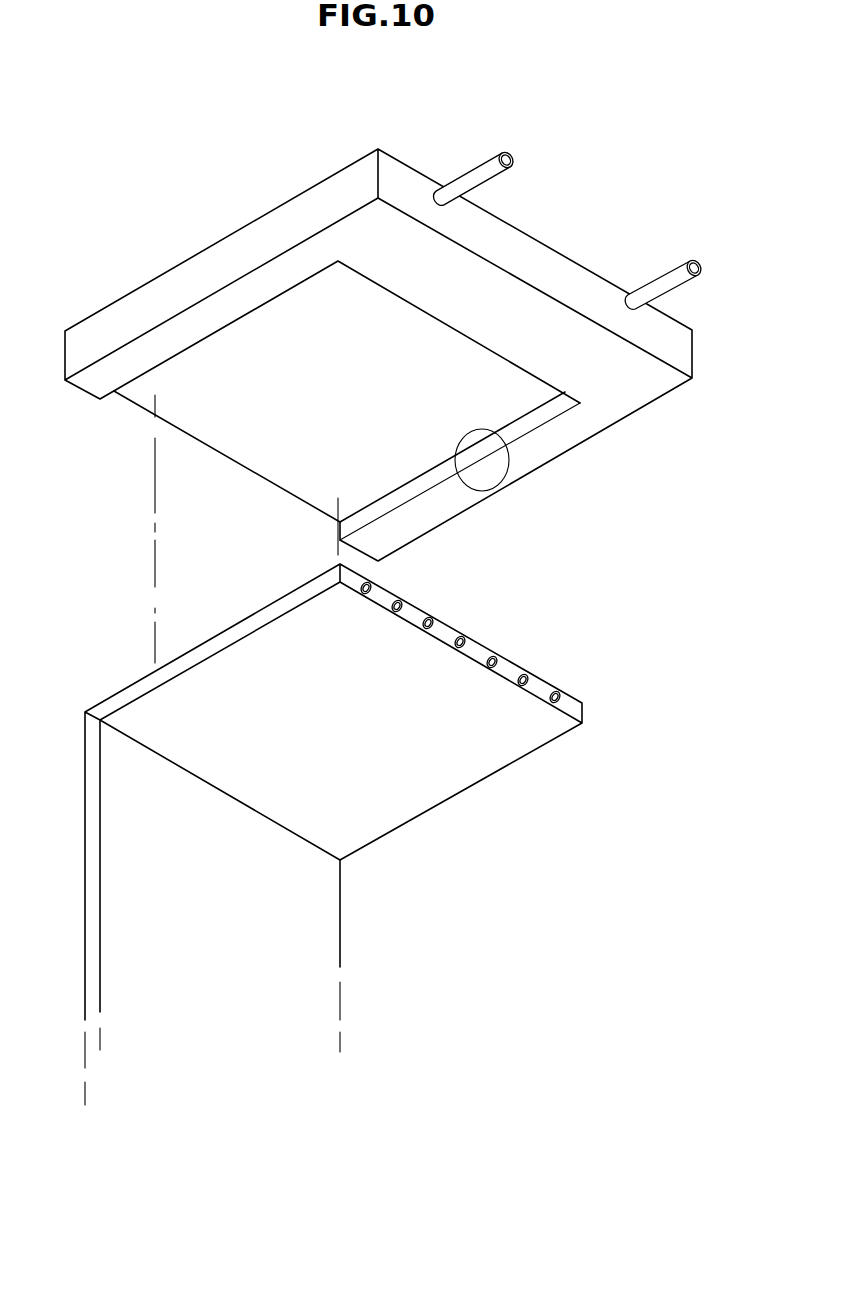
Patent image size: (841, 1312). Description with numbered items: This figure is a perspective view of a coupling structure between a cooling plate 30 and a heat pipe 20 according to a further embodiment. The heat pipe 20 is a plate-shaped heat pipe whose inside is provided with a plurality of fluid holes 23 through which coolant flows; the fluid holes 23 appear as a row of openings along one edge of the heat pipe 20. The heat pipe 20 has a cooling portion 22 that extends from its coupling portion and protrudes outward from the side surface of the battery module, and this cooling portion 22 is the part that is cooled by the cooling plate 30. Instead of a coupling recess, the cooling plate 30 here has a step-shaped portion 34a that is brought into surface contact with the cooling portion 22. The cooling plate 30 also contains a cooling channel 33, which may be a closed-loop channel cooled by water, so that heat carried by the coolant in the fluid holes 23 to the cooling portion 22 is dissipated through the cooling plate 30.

The cooling plate 30 is at (570, 230).
The cooling channel 33 is at (478, 170).
The step-shaped portion 34a is at (497, 487).
The heat pipe 20 is at (548, 660).
The fluid holes 23 is at (561, 693).
The cooling portion 22 is at (320, 913).